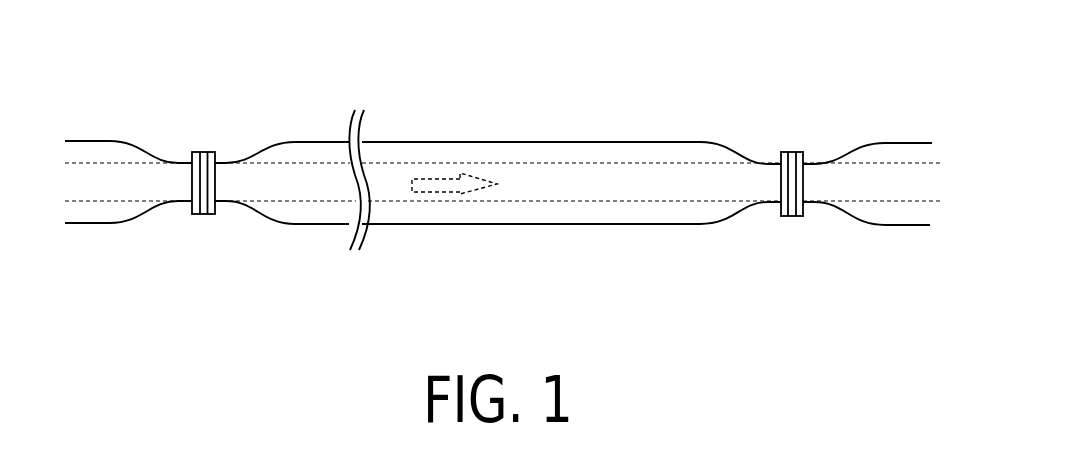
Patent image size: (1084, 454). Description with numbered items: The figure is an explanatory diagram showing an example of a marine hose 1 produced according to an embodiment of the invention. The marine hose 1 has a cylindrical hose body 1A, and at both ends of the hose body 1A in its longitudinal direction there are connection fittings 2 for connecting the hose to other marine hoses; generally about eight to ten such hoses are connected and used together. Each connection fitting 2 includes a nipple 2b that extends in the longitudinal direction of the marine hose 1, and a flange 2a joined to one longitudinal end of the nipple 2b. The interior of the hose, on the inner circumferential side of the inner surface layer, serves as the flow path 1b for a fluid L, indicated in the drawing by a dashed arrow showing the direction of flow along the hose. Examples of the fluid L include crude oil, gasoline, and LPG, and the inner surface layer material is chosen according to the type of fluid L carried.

The marine hose 1 is at (127, 134).
The hose body 1A is at (487, 151).
The flow path 1b is at (571, 168).
The connection fitting 2 is at (208, 77).
The flange 2a is at (217, 155).
The nipple 2b is at (280, 165).
The fluid L is at (425, 180).